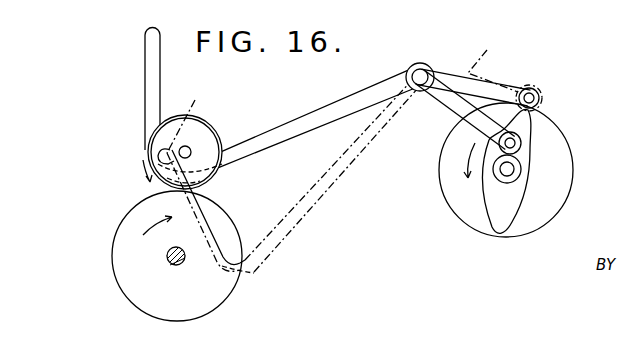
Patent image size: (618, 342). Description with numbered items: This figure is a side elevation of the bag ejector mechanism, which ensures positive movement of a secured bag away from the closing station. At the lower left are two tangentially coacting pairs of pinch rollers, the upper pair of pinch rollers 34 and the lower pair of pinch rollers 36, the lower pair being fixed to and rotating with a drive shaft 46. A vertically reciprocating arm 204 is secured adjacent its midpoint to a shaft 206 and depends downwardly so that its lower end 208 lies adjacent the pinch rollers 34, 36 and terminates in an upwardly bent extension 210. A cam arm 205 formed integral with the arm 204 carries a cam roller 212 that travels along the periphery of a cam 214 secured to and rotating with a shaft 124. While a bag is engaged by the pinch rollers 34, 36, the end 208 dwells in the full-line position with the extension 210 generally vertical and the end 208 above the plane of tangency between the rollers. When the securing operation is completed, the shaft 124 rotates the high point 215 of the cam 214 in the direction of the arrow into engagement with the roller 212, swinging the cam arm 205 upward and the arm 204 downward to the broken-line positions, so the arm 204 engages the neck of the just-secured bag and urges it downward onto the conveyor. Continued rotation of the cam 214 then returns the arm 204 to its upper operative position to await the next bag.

The upwardly bent extension 210 is at (148, 29).
The upper pair of pinch rollers 34 is at (208, 137).
The lower pair of pinch rollers 36 is at (210, 212).
The drive shaft 46 is at (167, 258).
The vertically reciprocating arm 204 is at (340, 107).
The lower end 208 is at (228, 170).
The shaft 206 is at (418, 70).
The cam arm 205 is at (433, 127).
The cam roller 212 is at (538, 92).
The cam 214 is at (552, 113).
The shaft 124 is at (518, 168).
The high point 215 is at (502, 224).